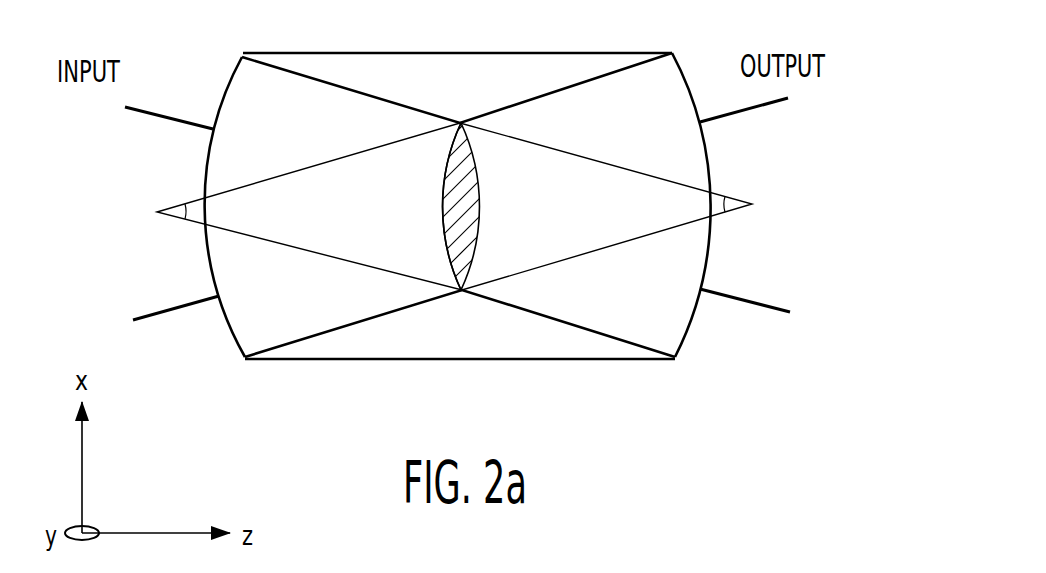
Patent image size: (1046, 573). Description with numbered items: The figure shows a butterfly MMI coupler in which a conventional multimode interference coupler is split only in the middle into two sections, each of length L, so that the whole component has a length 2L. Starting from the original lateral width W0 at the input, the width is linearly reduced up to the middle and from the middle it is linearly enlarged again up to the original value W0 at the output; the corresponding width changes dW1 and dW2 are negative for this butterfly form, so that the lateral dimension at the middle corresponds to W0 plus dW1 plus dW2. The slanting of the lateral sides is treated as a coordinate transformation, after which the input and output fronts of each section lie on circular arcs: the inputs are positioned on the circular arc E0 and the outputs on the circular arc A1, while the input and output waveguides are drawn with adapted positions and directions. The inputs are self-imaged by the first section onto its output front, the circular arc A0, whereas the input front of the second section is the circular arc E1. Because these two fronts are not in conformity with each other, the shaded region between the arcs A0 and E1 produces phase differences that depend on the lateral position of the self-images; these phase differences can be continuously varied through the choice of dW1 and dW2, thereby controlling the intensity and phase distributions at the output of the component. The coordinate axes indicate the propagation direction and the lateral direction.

The input circular arc E0 is at (220, 327).
The output circular arc A1 is at (697, 342).
The output front circular arc of first MMI section A0 is at (440, 193).
The input front circular arc of second MMI section E1 is at (482, 188).
The lateral dimension at input W0 is at (673, 60).
The total coupler length 2L is at (667, 31).
The section length L is at (458, 373).
The first width change dW1 is at (459, 118).
The second width change dW2 is at (463, 294).